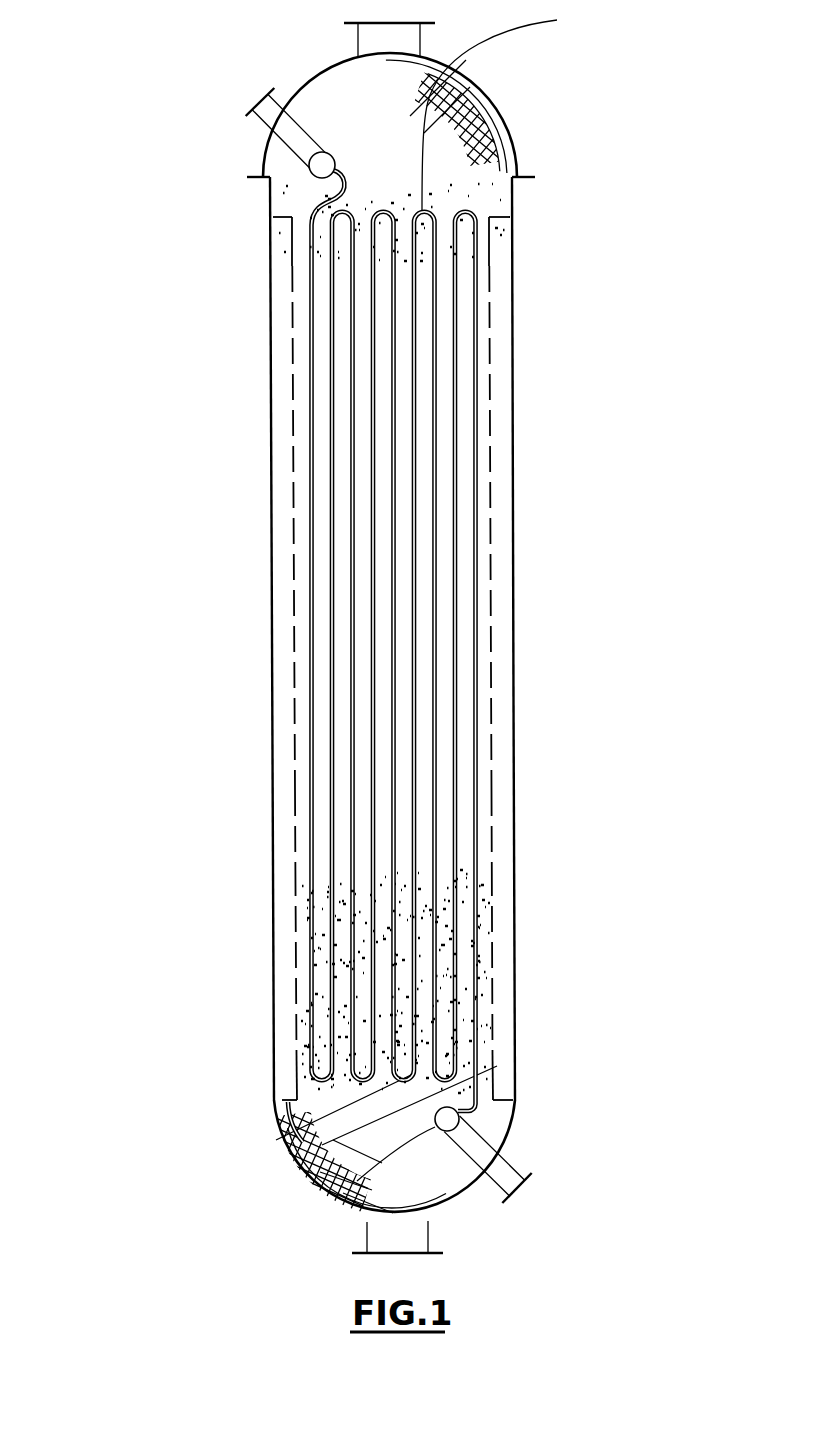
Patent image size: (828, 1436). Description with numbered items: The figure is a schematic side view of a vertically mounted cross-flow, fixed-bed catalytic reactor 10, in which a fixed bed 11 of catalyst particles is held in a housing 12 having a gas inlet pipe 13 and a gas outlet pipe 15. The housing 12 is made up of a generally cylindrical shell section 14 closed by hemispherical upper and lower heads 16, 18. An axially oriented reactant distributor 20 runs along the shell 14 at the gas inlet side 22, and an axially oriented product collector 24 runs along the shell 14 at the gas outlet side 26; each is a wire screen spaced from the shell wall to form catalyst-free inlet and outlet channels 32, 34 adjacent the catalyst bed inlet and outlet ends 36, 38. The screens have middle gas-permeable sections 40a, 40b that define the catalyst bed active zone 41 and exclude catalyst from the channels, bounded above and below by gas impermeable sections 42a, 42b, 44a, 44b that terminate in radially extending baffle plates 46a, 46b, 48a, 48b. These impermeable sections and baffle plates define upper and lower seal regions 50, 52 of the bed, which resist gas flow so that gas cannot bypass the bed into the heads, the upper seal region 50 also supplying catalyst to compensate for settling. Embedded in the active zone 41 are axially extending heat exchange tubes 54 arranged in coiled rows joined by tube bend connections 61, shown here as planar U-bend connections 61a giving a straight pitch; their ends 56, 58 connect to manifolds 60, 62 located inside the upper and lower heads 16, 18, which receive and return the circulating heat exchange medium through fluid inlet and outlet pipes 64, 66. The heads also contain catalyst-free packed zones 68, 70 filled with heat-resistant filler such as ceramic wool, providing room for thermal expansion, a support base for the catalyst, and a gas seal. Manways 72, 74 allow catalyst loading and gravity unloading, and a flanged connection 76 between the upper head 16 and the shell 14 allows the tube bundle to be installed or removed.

The reactor 10 is at (190, 1222).
The fixed bed 11 is at (447, 900).
The housing 12 is at (566, 1005).
The gas inlet pipe 13 is at (270, 640).
The shell section 14 is at (516, 953).
The gas outlet pipe 15 is at (512, 640).
The upper head 16 is at (493, 110).
The lower head 18 is at (514, 1124).
The reactant distributor 20 is at (293, 830).
The gas inlet side 22 is at (226, 713).
The product collector 24 is at (491, 830).
The gas outlet side 26 is at (562, 712).
The inlet channel 32 is at (273, 528).
The outlet channel 34 is at (512, 528).
The catalyst bed inlet end 36 is at (303, 921).
The catalyst bed outlet end 38 is at (488, 921).
The gas-permeable section 40a is at (293, 470).
The gas-permeable section 40b is at (491, 470).
The catalyst bed active zone 41 is at (385, 465).
The upper gas impermeable section 42a is at (294, 262).
The upper gas impermeable section 42b is at (492, 262).
The lower gas impermeable section 44a is at (298, 1057).
The lower gas impermeable section 44b is at (492, 1057).
The upper baffle plate 46a is at (273, 213).
The upper baffle plate 46b is at (510, 215).
The lower baffle plate 48a is at (288, 1098).
The lower baffle plate 48b is at (487, 1097).
The upper seal region 50 is at (261, 177).
The lower seal region 52 is at (290, 1130).
The heat exchange tubes 54 is at (372, 378).
The tube row end 56 is at (340, 168).
The tube row end 58 is at (510, 1156).
The manifold 60 is at (327, 152).
The lower refractory lining 61 is at (302, 1163).
The U-bend connections 61a is at (452, 90).
The manifold 62 is at (327, 1180).
The fluid inlet pipe 64 is at (257, 102).
The fluid outlet pipe 66 is at (516, 1198).
The catalyst-free zone 68 is at (506, 108).
The catalyst-free zone 70 is at (355, 1186).
The manway 72 is at (383, 22).
The manway 74 is at (400, 1257).
The flanged connection 76 is at (527, 176).